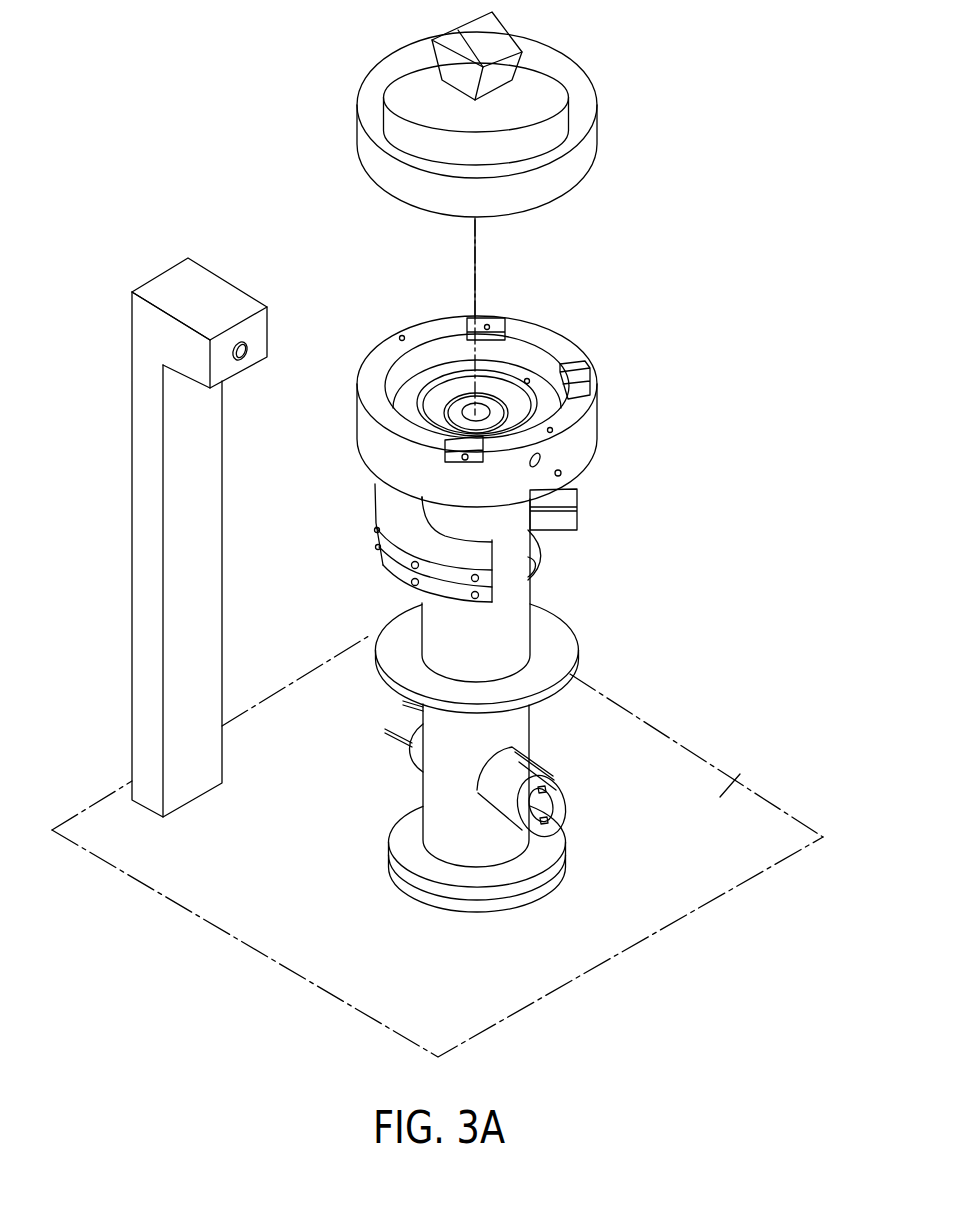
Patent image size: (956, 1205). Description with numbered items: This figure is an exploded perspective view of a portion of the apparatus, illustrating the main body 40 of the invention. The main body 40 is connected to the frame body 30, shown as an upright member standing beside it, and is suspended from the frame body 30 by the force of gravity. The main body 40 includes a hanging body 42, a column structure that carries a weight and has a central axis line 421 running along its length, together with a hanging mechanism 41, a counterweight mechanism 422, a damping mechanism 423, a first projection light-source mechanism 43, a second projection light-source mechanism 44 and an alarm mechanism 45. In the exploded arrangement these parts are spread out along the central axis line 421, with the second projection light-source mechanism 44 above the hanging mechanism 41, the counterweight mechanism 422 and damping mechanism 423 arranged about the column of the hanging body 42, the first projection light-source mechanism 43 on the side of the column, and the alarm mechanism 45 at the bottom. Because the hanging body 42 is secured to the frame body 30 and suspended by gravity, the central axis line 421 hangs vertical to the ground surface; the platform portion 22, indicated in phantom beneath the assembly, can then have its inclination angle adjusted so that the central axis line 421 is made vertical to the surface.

The platform portion 22 is at (746, 771).
The frame body 30 is at (153, 551).
The main body 40 is at (723, 285).
The hanging mechanism 41 is at (370, 425).
The hanging body 42 is at (438, 626).
The central axis line 421 is at (473, 278).
The counterweight mechanism 422 is at (397, 527).
The damping mechanism 423 is at (570, 638).
The first projection light-source mechanism 43 is at (553, 762).
The second projection light-source mechanism 44 is at (635, 97).
The alarm mechanism 45 is at (410, 838).